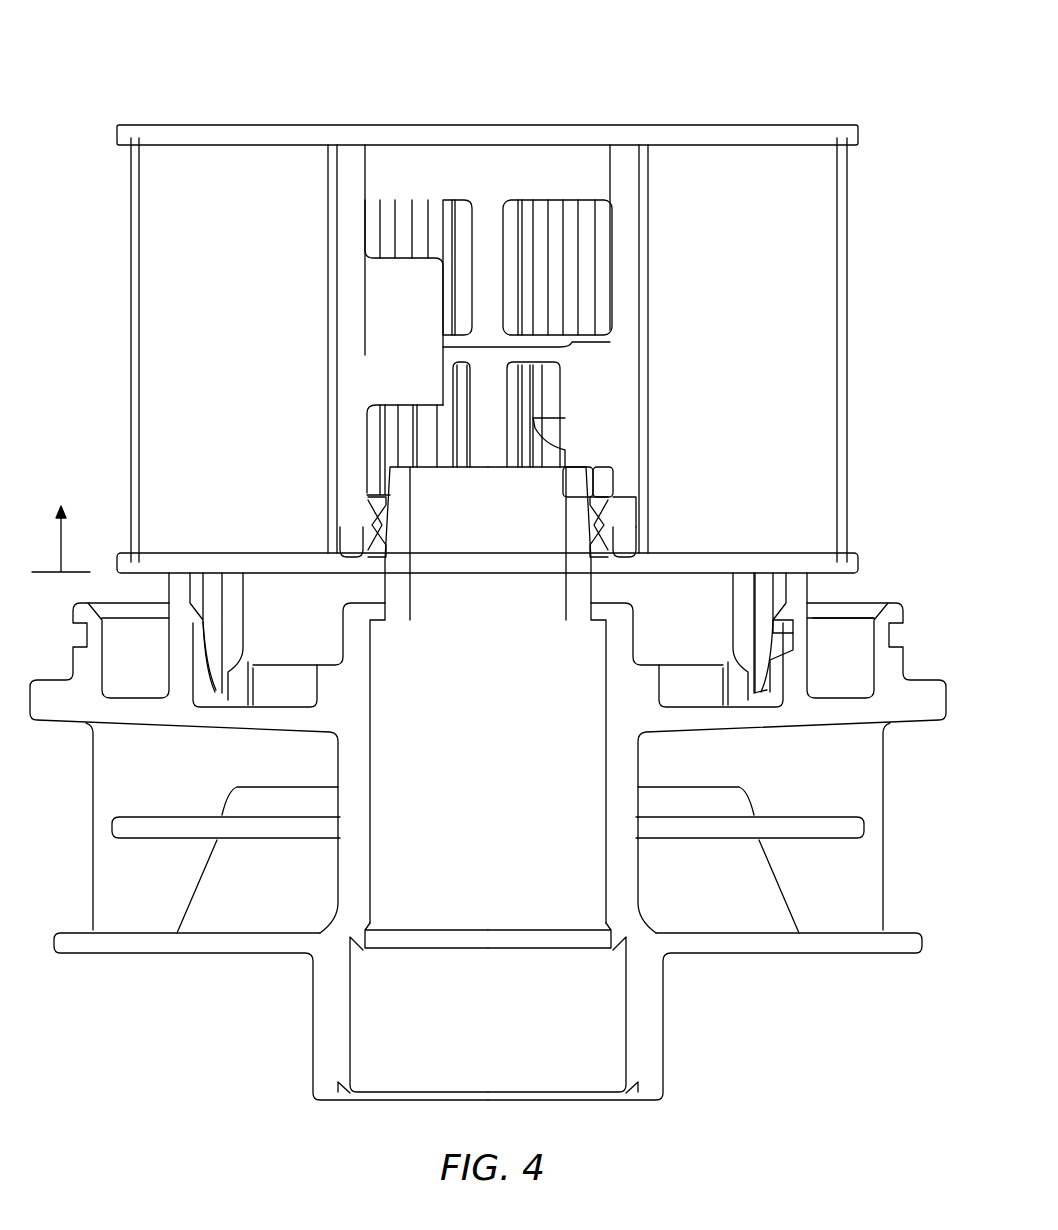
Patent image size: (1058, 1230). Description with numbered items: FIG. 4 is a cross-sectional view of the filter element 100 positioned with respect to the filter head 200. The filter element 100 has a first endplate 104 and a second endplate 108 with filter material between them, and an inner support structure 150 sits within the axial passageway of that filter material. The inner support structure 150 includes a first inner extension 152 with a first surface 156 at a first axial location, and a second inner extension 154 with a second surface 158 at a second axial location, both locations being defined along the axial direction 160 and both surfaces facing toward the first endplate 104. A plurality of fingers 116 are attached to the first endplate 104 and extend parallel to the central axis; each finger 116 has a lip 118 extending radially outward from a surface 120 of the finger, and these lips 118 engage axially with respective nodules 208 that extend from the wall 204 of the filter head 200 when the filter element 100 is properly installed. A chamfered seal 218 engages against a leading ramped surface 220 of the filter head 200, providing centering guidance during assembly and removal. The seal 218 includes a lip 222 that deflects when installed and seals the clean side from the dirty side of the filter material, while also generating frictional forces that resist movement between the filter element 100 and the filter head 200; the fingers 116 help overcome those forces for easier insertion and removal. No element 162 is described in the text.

The filter element 100 is at (750, 125).
The first endplate 104 is at (788, 567).
The second endplate 108 is at (233, 125).
The finger 116 is at (790, 660).
The lip 118 is at (763, 672).
The surface 120 is at (783, 655).
The inner support structure 150 is at (622, 175).
The first inner extension 152 is at (415, 332).
The second inner extension 154 is at (575, 418).
The first surface 156 is at (393, 408).
The second surface 158 is at (575, 487).
The axial direction 160 is at (62, 547).
The tab 162 is at (535, 418).
The filter head 200 is at (873, 957).
The wall 204 is at (817, 635).
The nodule 208 is at (203, 622).
The seal 218 is at (352, 500).
The leading ramped surface 220 is at (385, 470).
The lip 222 is at (365, 518).